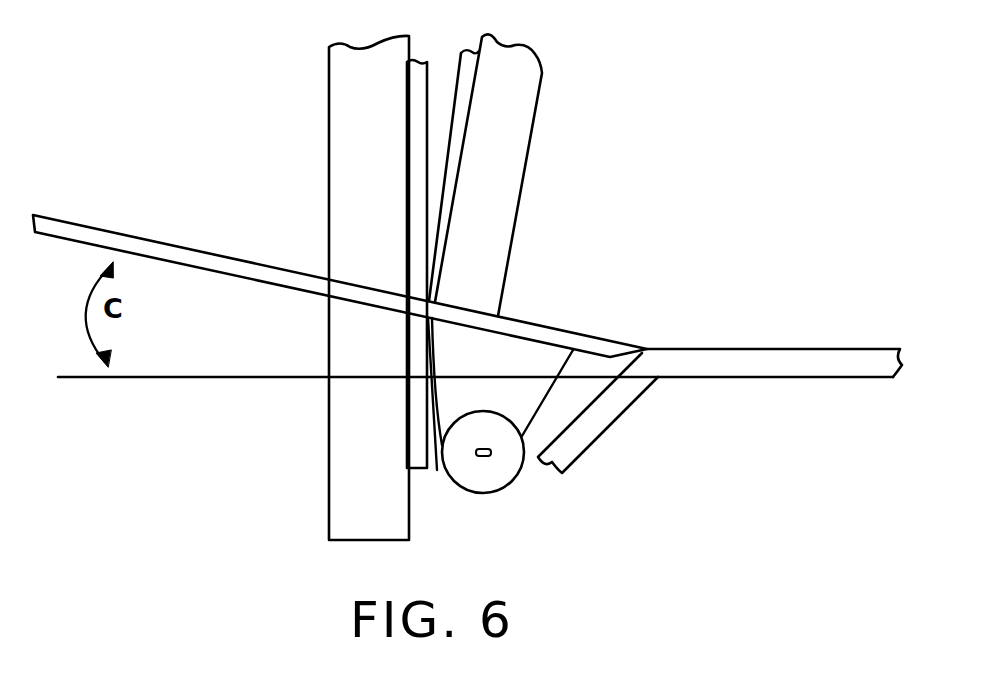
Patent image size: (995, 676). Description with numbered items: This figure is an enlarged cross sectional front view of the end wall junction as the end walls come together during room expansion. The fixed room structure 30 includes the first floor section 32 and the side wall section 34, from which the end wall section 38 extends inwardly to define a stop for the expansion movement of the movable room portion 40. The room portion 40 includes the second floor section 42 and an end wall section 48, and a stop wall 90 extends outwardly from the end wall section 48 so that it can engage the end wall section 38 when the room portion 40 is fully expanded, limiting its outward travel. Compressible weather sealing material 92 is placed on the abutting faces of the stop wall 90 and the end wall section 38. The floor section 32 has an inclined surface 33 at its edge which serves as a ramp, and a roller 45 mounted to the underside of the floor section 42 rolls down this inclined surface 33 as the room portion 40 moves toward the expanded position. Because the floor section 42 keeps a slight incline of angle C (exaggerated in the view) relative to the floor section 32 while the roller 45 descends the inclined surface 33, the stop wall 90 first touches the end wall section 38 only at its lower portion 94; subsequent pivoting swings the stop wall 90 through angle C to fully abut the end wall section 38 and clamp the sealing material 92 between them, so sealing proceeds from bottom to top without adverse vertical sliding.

The room structure 30 is at (748, 193).
The first floor section 32 is at (779, 348).
The inclined surface 33 is at (578, 412).
The side wall section 34 is at (329, 475).
The end wall section 38 is at (407, 508).
The room portion 40 is at (224, 141).
The second floor section 42 is at (165, 243).
The roller 45 is at (500, 476).
The end wall section 48 is at (492, 185).
The stop wall 90 is at (467, 127).
The weather sealing material 92 is at (413, 185).
The lower portion 94 is at (418, 278).